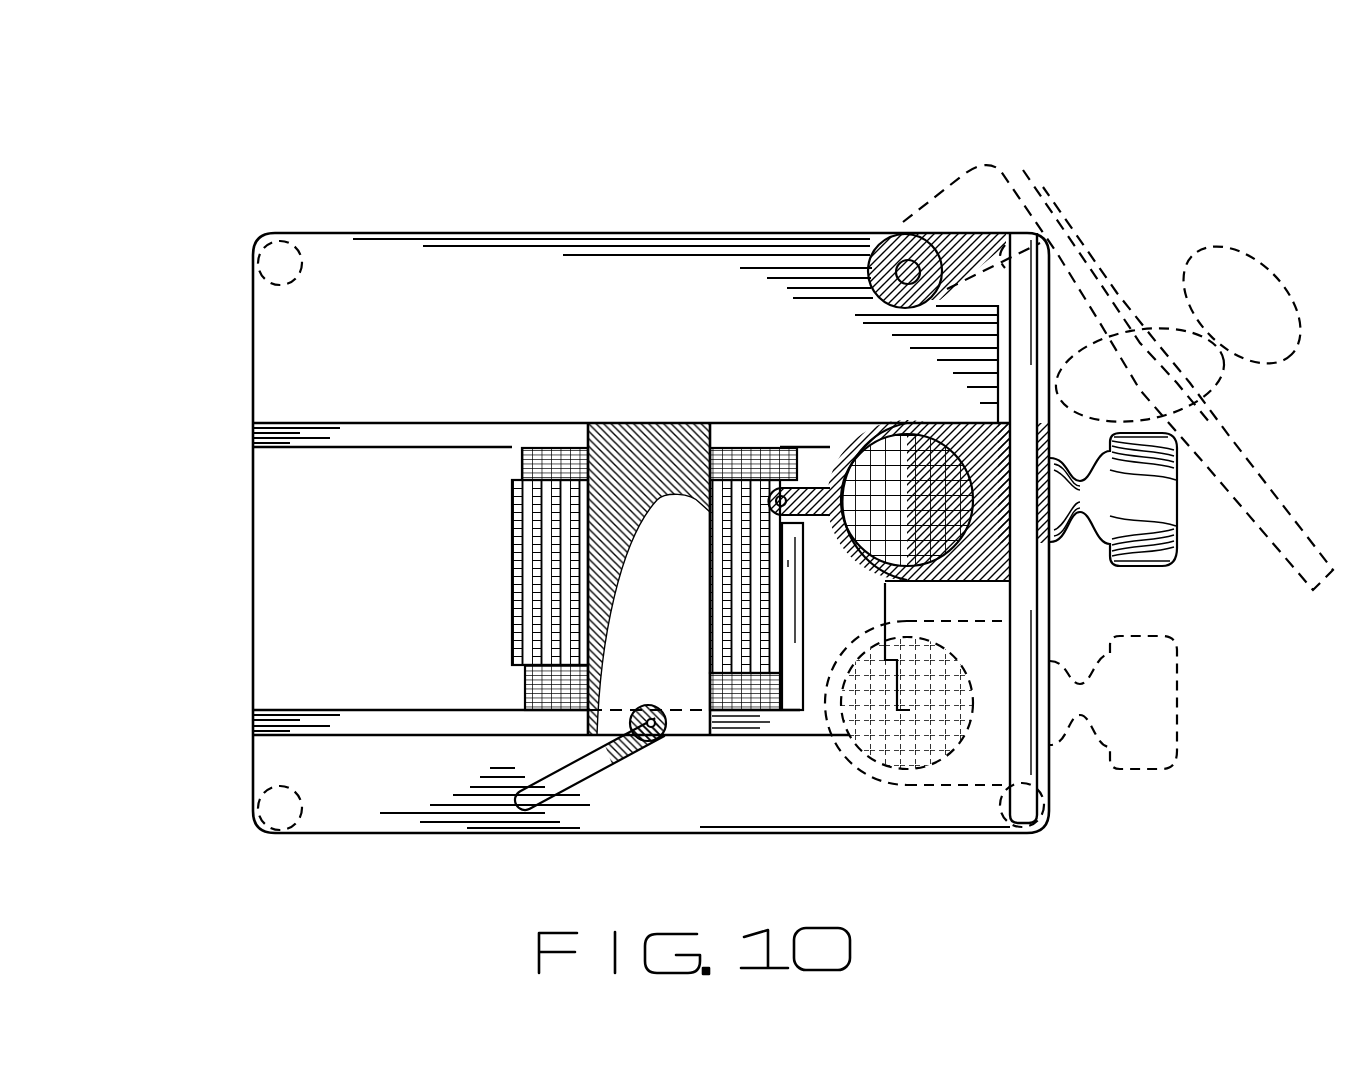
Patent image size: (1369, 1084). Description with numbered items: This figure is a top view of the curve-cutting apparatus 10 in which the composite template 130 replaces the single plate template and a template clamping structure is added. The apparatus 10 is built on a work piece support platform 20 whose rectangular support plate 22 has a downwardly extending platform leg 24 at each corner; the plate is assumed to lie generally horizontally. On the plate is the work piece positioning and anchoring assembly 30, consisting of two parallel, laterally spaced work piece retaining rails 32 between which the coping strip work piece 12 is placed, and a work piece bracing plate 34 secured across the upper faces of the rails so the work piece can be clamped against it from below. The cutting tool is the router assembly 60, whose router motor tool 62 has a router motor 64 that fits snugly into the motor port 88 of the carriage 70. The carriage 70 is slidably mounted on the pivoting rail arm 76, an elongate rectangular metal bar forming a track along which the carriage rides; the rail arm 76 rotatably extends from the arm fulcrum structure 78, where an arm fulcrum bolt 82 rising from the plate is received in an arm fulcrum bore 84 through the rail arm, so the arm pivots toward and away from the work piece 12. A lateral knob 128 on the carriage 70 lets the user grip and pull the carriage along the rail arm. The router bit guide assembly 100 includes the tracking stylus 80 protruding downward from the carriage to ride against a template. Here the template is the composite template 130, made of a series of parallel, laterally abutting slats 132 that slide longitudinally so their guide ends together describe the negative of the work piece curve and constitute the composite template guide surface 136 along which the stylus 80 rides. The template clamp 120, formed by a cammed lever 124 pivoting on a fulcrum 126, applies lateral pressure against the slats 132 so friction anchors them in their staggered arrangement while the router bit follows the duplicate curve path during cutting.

The apparatus 10 is at (1150, 186).
The work piece 12 is at (1050, 822).
The work piece support platform 20 is at (580, 236).
The support plate 22 is at (638, 270).
The platform leg 24 is at (262, 251).
The work piece positioning and anchoring assembly 30 is at (570, 176).
The work piece retaining rails 32 is at (252, 424).
The work piece bracing plate 34 is at (612, 563).
The router assembly 60 is at (768, 320).
The router motor tool 62 is at (974, 452).
The router motor 64 is at (944, 537).
The carriage 70 is at (1000, 567).
The pivoting rail arm 76 is at (1285, 519).
The arm fulcrum structure 78 is at (866, 172).
The tracking stylus 80 is at (773, 450).
The arm fulcrum bolt 82 is at (908, 236).
The arm fulcrum bore 84 is at (870, 262).
The motor port 88 is at (985, 620).
The router bit guide assembly 100 is at (745, 172).
The template clamp 120 is at (649, 777).
The cammed lever 124 is at (522, 810).
The fulcrum 126 is at (669, 732).
The lateral knob 128 is at (1262, 297).
The composite template 130 is at (527, 452).
The slats 132 is at (512, 640).
The composite template guide surface 136 is at (935, 640).